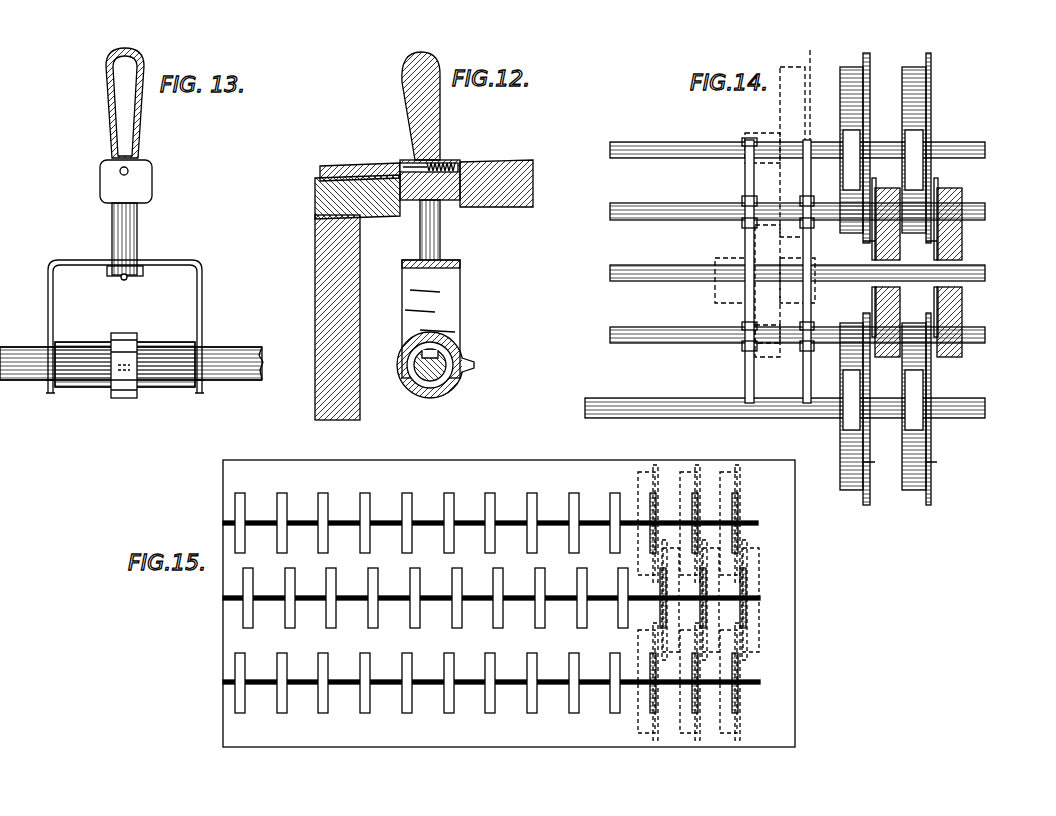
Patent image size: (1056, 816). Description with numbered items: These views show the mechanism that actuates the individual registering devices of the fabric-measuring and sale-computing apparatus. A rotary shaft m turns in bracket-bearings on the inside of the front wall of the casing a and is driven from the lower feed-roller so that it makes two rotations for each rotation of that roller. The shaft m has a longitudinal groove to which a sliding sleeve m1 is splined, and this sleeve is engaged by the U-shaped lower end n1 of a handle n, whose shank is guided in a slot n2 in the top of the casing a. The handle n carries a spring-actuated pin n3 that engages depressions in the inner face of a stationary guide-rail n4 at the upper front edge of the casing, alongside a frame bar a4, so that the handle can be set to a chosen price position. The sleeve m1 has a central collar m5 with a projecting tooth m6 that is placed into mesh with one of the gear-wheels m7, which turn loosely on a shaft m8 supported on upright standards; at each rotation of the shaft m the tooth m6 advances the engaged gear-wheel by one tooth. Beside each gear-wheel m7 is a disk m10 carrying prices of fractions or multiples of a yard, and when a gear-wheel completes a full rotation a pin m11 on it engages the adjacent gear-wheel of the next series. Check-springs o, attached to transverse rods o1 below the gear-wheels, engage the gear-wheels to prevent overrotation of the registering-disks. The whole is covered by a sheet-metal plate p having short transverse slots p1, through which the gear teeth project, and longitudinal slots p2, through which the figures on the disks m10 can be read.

In FIG. 13, the handle n is at (132, 103).
In FIG. 12, the handle n is at (429, 106).
In FIG. 13, the U-shaped lower end n1 is at (120, 326).
In FIG. 12, the U-shaped lower end n1 is at (418, 370).
In FIG. 12, the slot n2 is at (452, 205).
In FIG. 13, the spring-actuated pin n3 is at (128, 171).
In FIG. 12, the spring-actuated pin n3 is at (406, 163).
In FIG. 12, the stationary guide-rail n4 is at (332, 165).
In FIG. 12, the casing a is at (315, 298).
In FIG. 12, the frame bar a4 is at (496, 171).
In FIG. 13, the rotary shaft m is at (131, 351).
In FIG. 12, the rotary shaft m is at (432, 370).
In FIG. 13, the sliding sleeve m1 is at (80, 345).
In FIG. 13, the central collar m5 is at (134, 400).
In FIG. 12, the central collar m5 is at (458, 388).
In FIG. 13, the projecting tooth m6 is at (118, 368).
In FIG. 12, the projecting tooth m6 is at (476, 365).
In FIG. 14, the gear-wheel m7 is at (868, 55).
In FIG. 15, the gear-wheel m7 is at (650, 700).
In FIG. 14, the shaft m8 is at (610, 150).
In FIG. 14, the registering-disk m10 is at (852, 70).
In FIG. 15, the registering-disk m10 is at (645, 478).
In FIG. 14, the pin m11 is at (948, 470).
In FIG. 14, the check-spring o is at (765, 270).
In FIG. 14, the transverse rod o1 is at (610, 212).
In FIG. 15, the sheet-metal plate p is at (806, 610).
In FIG. 15, the transverse slot p1 is at (575, 572).
In FIG. 15, the longitudinal slot p2 is at (420, 530).